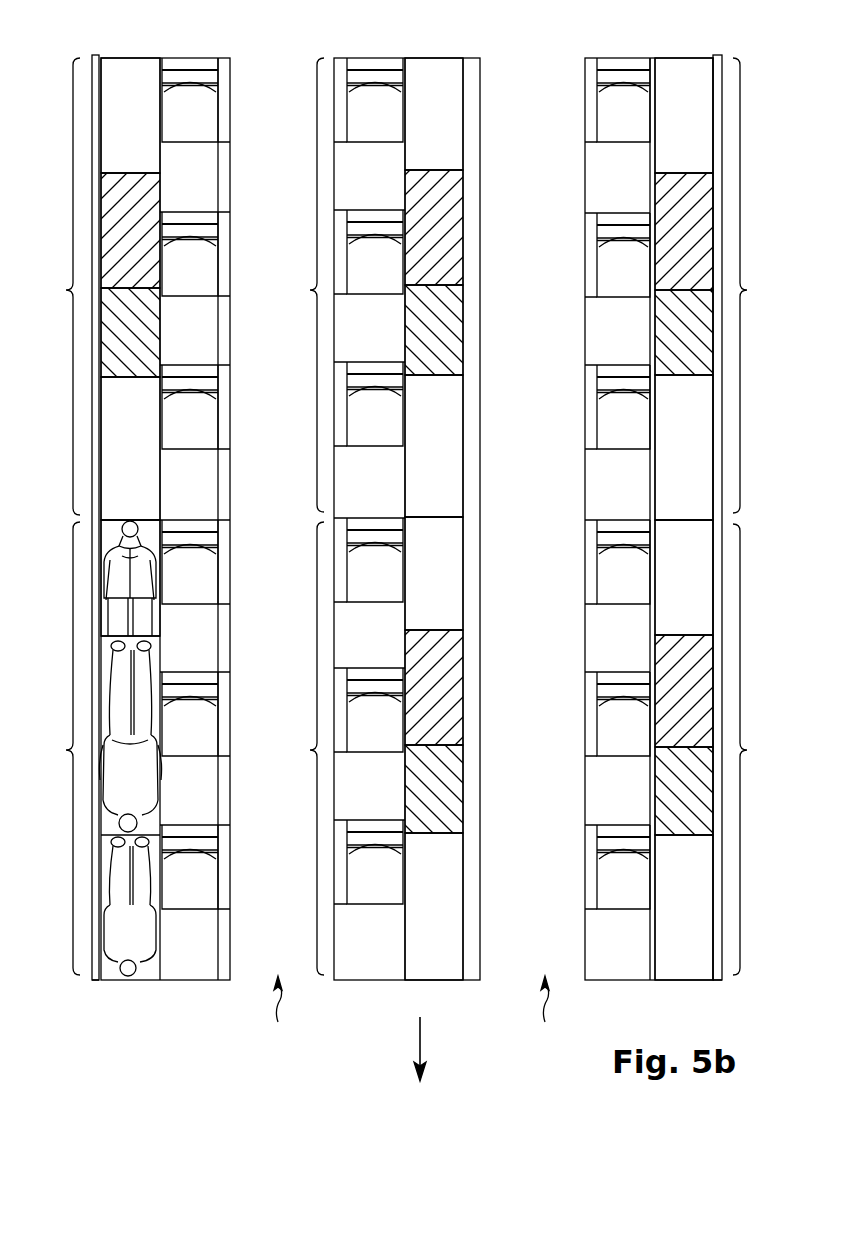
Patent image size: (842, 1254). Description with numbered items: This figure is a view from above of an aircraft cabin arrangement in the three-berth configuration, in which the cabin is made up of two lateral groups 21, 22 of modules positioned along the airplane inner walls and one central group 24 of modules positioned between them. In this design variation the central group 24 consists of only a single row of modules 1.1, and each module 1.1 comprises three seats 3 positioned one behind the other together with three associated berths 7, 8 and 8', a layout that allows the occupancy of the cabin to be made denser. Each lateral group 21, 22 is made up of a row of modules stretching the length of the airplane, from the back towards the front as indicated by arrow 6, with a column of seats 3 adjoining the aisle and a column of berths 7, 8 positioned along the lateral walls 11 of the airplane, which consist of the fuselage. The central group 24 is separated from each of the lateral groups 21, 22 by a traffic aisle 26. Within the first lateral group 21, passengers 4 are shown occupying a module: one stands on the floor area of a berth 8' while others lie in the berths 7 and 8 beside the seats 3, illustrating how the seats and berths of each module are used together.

The lateral group 21 is at (100, 46).
The central group 24 is at (338, 46).
The lateral group 22 is at (585, 46).
The module 1.1 is at (405, 516).
The seat 3 is at (191, 120).
The passenger 4 is at (121, 527).
The arrow 6 is at (422, 1027).
The berth 7 is at (112, 815).
The berth 8 is at (407, 702).
The berth 8' is at (381, 347).
The lateral wall 11 is at (100, 982).
The traffic aisle 26 is at (412, 1013).